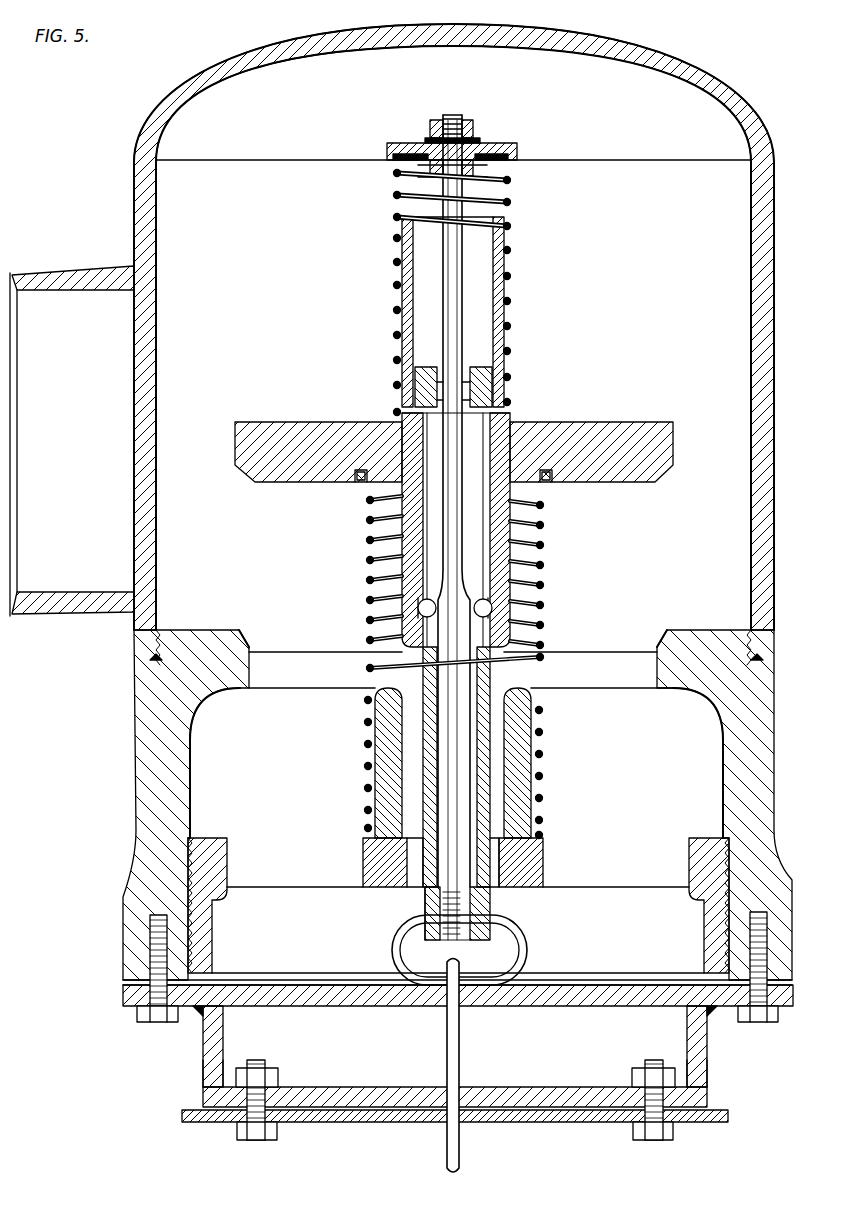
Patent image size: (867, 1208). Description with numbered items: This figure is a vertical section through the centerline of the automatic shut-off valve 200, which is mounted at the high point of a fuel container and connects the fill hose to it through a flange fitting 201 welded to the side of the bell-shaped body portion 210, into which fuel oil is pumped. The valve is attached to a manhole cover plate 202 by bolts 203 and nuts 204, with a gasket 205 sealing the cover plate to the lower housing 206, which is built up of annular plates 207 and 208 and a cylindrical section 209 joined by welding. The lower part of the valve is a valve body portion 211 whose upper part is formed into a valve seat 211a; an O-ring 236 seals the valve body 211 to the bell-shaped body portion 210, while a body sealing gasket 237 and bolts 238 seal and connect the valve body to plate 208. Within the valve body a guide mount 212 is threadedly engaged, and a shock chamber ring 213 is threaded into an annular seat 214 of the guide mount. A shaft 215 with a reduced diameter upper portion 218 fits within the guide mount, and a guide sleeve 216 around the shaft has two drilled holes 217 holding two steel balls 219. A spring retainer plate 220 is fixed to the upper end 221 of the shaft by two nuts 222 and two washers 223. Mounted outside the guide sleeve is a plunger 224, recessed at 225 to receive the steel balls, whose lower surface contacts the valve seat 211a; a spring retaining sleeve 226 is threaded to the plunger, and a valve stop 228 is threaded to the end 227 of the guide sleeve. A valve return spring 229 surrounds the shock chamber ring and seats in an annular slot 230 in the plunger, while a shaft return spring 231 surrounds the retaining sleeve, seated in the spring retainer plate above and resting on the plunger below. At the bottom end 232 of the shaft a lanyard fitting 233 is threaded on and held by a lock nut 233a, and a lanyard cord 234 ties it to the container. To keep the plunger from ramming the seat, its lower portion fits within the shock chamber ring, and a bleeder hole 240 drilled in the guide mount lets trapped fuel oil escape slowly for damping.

The valve 200 is at (107, 738).
The flange fitting 201 is at (60, 272).
The manhole cover plate 202 is at (196, 1123).
The bolts 203 is at (275, 1141).
The nuts 204 is at (280, 1076).
The gasket 205 is at (282, 1124).
The lower housing 206 is at (205, 1060).
The annular plate 207 is at (207, 1100).
The annular plate 208 is at (125, 988).
The cylindrical section 209 is at (225, 1028).
The bell-shaped body portion 210 is at (728, 90).
The valve body portion 211 is at (192, 768).
The valve seat 211a is at (252, 640).
The guide mount 212 is at (213, 840).
The shock chamber ring 213 is at (543, 756).
The annular seat 214 is at (535, 860).
The shaft 215 is at (492, 720).
The guide sleeve 216 is at (512, 528).
The drilled holes 217 is at (395, 640).
The reduced diameter upper portion 218 is at (390, 556).
The steel balls 219 is at (416, 608).
The spring retainer plate 220 is at (512, 145).
The upper end 221 is at (456, 117).
The nuts 222 is at (430, 128).
The washers 223 is at (480, 140).
The plunger 224 is at (628, 424).
The recess 225 is at (420, 598).
The spring retaining sleeve 226 is at (496, 402).
The end of guide sleeve 227 is at (494, 385).
The valve stop 228 is at (415, 370).
The valve return spring 229 is at (365, 764).
The annular slot 230 is at (355, 482).
The shaft return spring 231 is at (512, 282).
The bottom end 232 is at (492, 900).
The lanyard fitting 233 is at (528, 948).
The lock nut 233a is at (424, 896).
The lanyard cord 234 is at (462, 1142).
The O-ring 236 is at (745, 662).
The body sealing gasket 237 is at (125, 992).
The bolts 238 is at (155, 1024).
The bleeder hole 240 is at (398, 876).